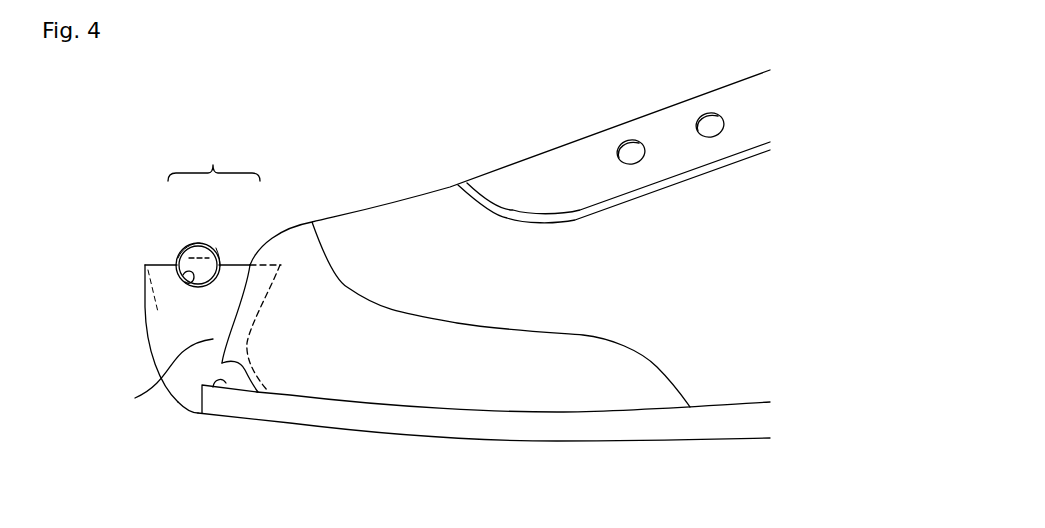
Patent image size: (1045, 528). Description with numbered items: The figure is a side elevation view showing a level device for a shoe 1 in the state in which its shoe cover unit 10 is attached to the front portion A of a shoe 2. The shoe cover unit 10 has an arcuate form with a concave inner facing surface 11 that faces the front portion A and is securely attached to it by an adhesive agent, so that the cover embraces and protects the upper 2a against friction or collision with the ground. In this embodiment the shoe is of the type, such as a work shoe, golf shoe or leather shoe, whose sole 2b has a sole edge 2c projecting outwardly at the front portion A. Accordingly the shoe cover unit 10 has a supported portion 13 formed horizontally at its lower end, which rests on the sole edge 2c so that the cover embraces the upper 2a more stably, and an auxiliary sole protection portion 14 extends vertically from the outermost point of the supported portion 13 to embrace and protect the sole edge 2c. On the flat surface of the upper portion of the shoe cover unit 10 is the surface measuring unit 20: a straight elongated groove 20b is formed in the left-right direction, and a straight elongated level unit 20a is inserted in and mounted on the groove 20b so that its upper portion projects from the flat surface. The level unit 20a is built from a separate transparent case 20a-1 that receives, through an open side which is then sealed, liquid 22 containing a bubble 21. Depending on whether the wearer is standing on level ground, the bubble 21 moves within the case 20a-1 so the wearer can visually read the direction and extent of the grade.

The footwear 1 is at (131, 327).
The shoe 2 is at (438, 188).
The upper 2a is at (405, 392).
The sole 2b is at (350, 430).
The sole edge 2c is at (220, 390).
The shoe cover unit 10 is at (154, 350).
The inner facing surface 11 is at (252, 383).
The supported portion 13 is at (232, 388).
The auxiliary sole protection portion 14 is at (183, 403).
The surface measuring unit 20 is at (166, 241).
The level unit 20a is at (214, 160).
The transparent case 20a-1 is at (222, 257).
The elongated groove 20b is at (191, 282).
The bubble 21 is at (196, 246).
The liquid 22 is at (208, 250).
The front portion A is at (129, 411).